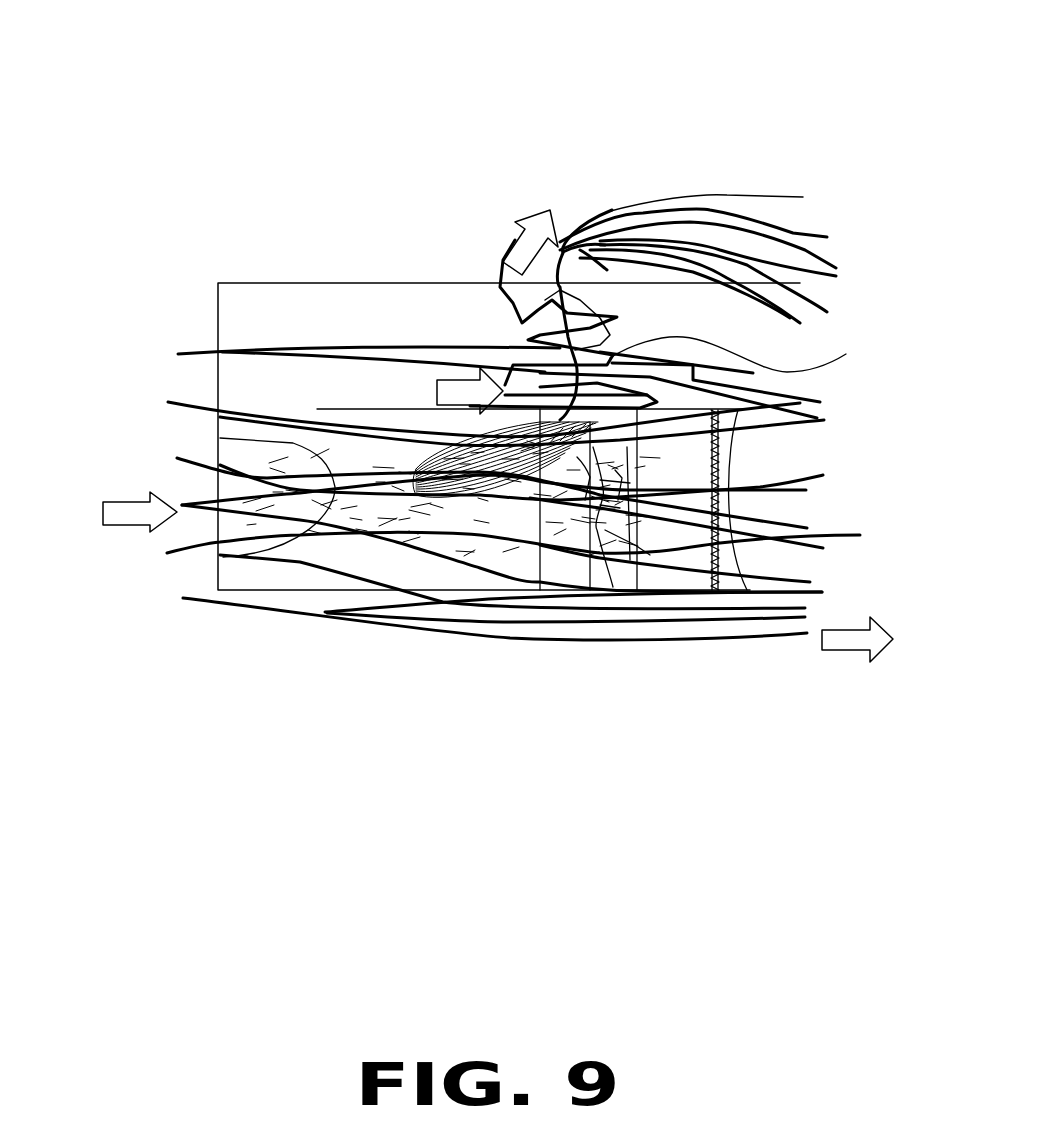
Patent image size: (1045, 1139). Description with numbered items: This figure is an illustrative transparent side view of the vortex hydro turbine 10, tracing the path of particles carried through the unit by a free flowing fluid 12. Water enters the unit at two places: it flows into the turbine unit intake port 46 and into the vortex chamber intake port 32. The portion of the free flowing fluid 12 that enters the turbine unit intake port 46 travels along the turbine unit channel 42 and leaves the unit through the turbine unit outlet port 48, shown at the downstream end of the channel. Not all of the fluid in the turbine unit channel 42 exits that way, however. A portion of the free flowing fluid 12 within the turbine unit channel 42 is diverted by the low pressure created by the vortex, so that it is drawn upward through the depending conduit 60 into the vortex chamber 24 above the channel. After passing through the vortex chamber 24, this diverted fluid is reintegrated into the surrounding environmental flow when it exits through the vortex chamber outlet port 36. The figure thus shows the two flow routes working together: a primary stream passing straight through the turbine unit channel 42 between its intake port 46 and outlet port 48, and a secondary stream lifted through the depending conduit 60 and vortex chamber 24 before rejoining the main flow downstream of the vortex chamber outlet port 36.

The vortex hydro turbine 10 is at (763, 88).
The free flowing fluid 12 is at (127, 502).
The vortex chamber 24 is at (846, 354).
The vortex chamber intake port 32 is at (520, 388).
The vortex chamber outlet port 36 is at (620, 213).
The turbine unit channel 42 is at (395, 513).
The turbine unit intake port 46 is at (210, 489).
The turbine unit outlet port 48 is at (728, 502).
The depending conduit 60 is at (540, 470).